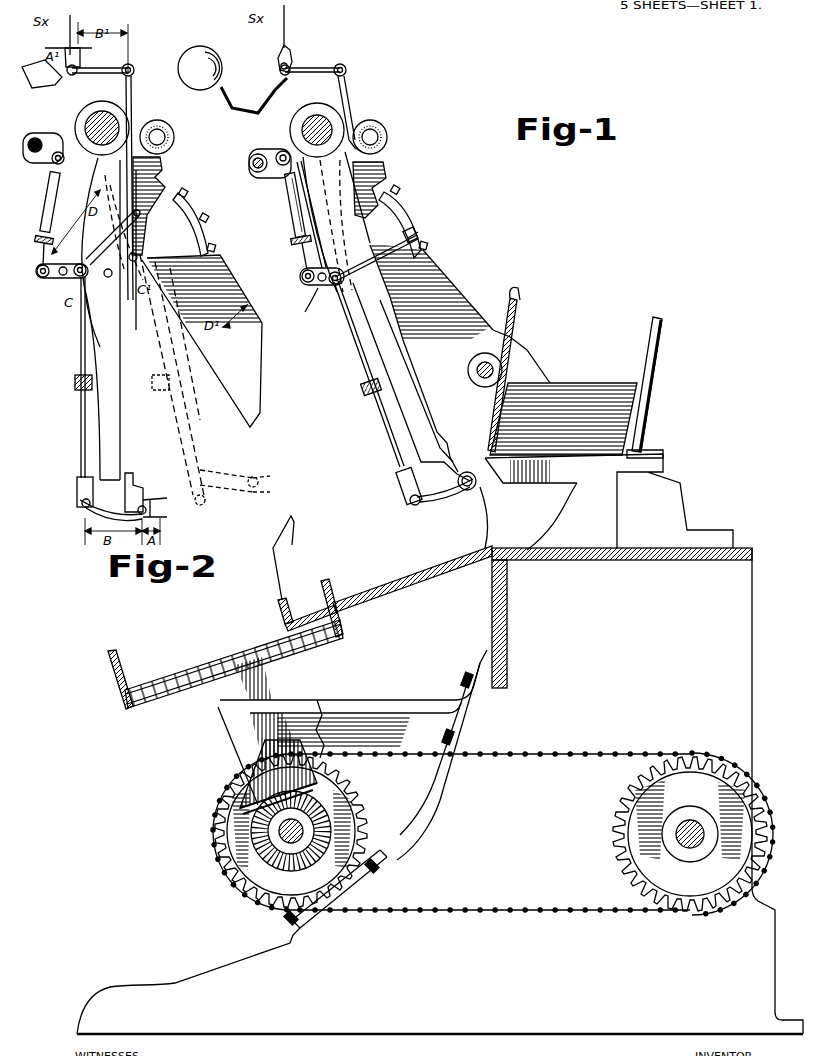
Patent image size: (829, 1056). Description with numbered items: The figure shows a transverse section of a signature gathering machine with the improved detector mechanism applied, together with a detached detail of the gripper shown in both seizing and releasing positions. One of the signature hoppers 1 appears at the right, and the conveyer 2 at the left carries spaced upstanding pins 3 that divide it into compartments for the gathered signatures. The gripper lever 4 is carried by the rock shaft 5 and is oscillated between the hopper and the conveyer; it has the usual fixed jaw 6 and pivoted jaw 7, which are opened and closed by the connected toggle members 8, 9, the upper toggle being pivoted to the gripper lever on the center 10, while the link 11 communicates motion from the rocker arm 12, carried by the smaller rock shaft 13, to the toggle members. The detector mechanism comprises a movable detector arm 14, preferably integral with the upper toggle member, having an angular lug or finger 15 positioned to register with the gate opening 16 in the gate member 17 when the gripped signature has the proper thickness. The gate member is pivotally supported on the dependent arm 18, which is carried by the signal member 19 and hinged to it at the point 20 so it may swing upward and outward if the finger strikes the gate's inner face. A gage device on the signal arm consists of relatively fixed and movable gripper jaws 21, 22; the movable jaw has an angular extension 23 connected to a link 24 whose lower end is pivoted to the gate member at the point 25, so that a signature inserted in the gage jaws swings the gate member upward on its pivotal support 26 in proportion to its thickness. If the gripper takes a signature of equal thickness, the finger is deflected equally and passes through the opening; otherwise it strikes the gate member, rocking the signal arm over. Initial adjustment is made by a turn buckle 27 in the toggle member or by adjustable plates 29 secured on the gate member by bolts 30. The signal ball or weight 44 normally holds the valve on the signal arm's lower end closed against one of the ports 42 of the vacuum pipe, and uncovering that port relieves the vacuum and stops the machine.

In FIG. 1, the signature hopper 1 is at (660, 362).
In FIG. 1, the conveyer 2 is at (180, 668).
In FIG. 1, the upstanding pins 3 is at (113, 667).
In FIG. 1, the gripper lever 4 is at (396, 357).
In FIG. 1, the rock shaft 5 is at (570, 385).
In FIG. 2, the rock shaft 5 is at (105, 110).
In FIG. 1, the fixed jaw 6 is at (470, 472).
In FIG. 1, the pivoted jaw 7 is at (459, 503).
In FIG. 1, the toggle member 8 is at (353, 353).
In FIG. 2, the toggle member 8 is at (81, 330).
In FIG. 1, the toggle member 9 is at (318, 292).
In FIG. 2, the toggle member 9 is at (46, 280).
In FIG. 1, the center 10 is at (319, 282).
In FIG. 1, the link 11 is at (290, 222).
In FIG. 2, the link 11 is at (47, 200).
In FIG. 1, the rocker arm 12 is at (256, 158).
In FIG. 1, the rock shaft 13 is at (256, 168).
In FIG. 1, the detector arm 14 is at (419, 246).
In FIG. 2, the detector arm 14 is at (205, 380).
In FIG. 1, the angular lug or finger 15 is at (423, 231).
In FIG. 1, the gate opening 16 is at (416, 232).
In FIG. 1, the gate member 17 is at (407, 202).
In FIG. 2, the gate member 17 is at (196, 216).
In FIG. 1, the dependent arm 18 is at (320, 245).
In FIG. 2, the dependent arm 18 is at (97, 197).
In FIG. 1, the signal member 19 is at (218, 97).
In FIG. 1, the hinge point 20 is at (344, 224).
In FIG. 2, the hinge point 20 is at (150, 166).
In FIG. 1, the fixed gage jaw 21 is at (289, 50).
In FIG. 1, the movable gage jaw 22 is at (279, 52).
In FIG. 1, the angular extension 23 is at (315, 67).
In FIG. 1, the link 24 is at (348, 98).
In FIG. 2, the link 24 is at (133, 82).
In FIG. 1, the pivot point 25 is at (341, 290).
In FIG. 1, the pivotal support 26 is at (302, 276).
In FIG. 2, the pivotal support 26 is at (111, 300).
In FIG. 1, the turn buckle 27 is at (362, 388).
In FIG. 2, the turn buckle 27 is at (75, 386).
In FIG. 1, the adjustable plates 29 is at (418, 243).
In FIG. 1, the bolts 30 is at (397, 186).
In FIG. 2, the ports 42 is at (162, 153).
In FIG. 1, the signal ball or weight 44 is at (185, 58).